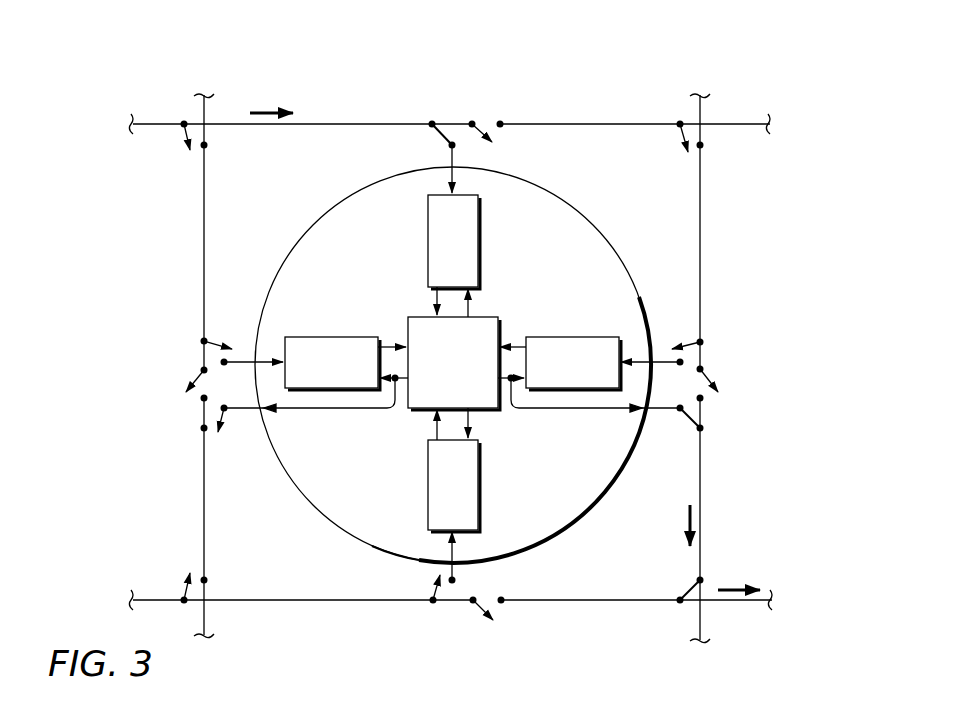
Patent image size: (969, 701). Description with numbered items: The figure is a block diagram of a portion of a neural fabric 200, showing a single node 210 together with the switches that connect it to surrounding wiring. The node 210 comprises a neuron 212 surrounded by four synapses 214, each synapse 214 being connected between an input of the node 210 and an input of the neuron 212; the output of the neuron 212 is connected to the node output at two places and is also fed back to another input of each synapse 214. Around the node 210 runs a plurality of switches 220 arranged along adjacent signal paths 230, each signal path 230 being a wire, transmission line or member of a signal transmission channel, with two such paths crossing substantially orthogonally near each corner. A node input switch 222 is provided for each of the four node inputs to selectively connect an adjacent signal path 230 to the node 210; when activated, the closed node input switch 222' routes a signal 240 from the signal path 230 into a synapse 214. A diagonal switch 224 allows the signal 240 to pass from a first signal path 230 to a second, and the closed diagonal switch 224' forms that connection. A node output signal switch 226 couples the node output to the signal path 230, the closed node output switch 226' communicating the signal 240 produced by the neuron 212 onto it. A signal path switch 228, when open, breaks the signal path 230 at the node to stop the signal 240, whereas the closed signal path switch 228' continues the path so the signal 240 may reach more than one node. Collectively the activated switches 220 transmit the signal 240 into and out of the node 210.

The neural fabric 200 is at (736, 88).
The node 210 is at (325, 220).
The neuron 212 is at (485, 402).
The synapse 214 is at (428, 245).
The plurality of switches 220 is at (127, 222).
The node input switch 222 is at (456, 460).
The closed node input switch 222' is at (385, 106).
The diagonal switch 224 is at (394, 362).
The closed diagonal switch 224' is at (639, 575).
The node output signal switch 226 is at (184, 458).
The closed node output switch 226' is at (726, 458).
The signal path switch 228 is at (458, 517).
The closed signal path switch 228' is at (535, 105).
The signal path 230 is at (204, 108).
The signal 240 is at (270, 112).